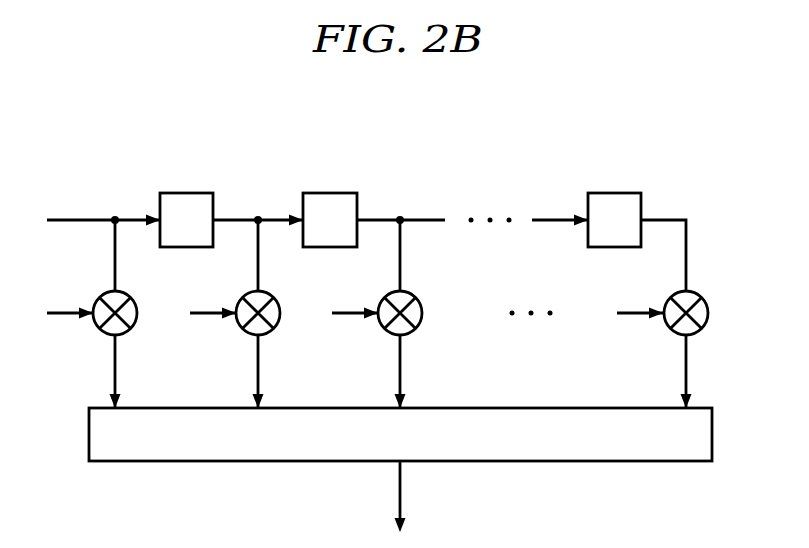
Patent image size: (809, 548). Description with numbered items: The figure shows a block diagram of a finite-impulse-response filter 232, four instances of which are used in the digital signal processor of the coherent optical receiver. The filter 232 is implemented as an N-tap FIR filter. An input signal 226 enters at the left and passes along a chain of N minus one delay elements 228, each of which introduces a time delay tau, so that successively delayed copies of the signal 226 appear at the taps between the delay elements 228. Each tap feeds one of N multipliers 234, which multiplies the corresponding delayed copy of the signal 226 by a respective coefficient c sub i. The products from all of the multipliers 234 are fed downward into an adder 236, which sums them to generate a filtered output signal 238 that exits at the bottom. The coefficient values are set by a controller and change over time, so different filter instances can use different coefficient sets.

The finite-impulse-response filter 232 is at (414, 96).
The signal 226 is at (80, 219).
The delay elements 228 is at (181, 193).
The multipliers 234 is at (126, 336).
The adder 236 is at (713, 434).
The filtered output signal 238 is at (402, 498).